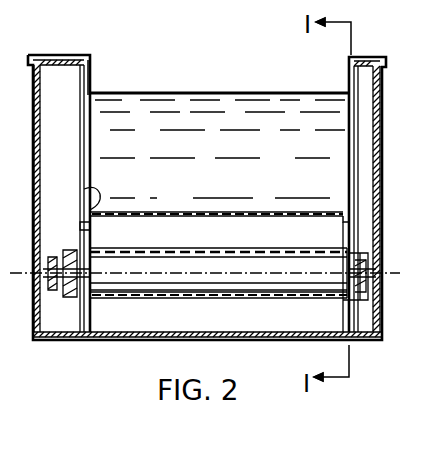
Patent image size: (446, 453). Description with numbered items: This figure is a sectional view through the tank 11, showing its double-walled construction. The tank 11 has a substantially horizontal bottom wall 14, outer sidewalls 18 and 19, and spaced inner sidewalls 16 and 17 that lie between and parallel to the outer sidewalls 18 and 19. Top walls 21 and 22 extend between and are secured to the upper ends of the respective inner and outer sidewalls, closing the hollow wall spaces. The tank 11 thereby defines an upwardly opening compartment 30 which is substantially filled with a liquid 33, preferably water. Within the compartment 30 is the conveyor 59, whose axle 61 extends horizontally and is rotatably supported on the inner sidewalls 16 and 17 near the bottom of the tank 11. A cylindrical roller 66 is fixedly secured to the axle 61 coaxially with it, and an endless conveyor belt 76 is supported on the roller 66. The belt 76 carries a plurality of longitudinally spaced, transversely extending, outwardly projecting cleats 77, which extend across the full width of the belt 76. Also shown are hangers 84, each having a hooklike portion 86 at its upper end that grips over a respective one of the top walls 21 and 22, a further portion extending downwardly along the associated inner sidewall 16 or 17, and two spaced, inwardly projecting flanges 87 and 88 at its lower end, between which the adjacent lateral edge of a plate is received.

The tank 11 is at (387, 111).
The bottom wall 14 is at (223, 335).
The inner sidewall 16 is at (40, 155).
The inner sidewall 17 is at (357, 169).
The outer sidewall 18 is at (35, 123).
The outer sidewall 19 is at (378, 135).
The top wall 21 is at (33, 88).
The top wall 22 is at (368, 80).
The compartment 30 is at (195, 80).
The liquid 33 is at (265, 120).
The conveyor 59 is at (166, 328).
The axle 61 is at (378, 270).
The cylindrical roller 66 is at (127, 303).
The endless conveyor belt 76 is at (321, 303).
The cleats 77 is at (329, 232).
The hanger 84 is at (90, 80).
The hooklike portion 86 is at (68, 55).
The flange 87 is at (84, 189).
The flange 88 is at (80, 231).